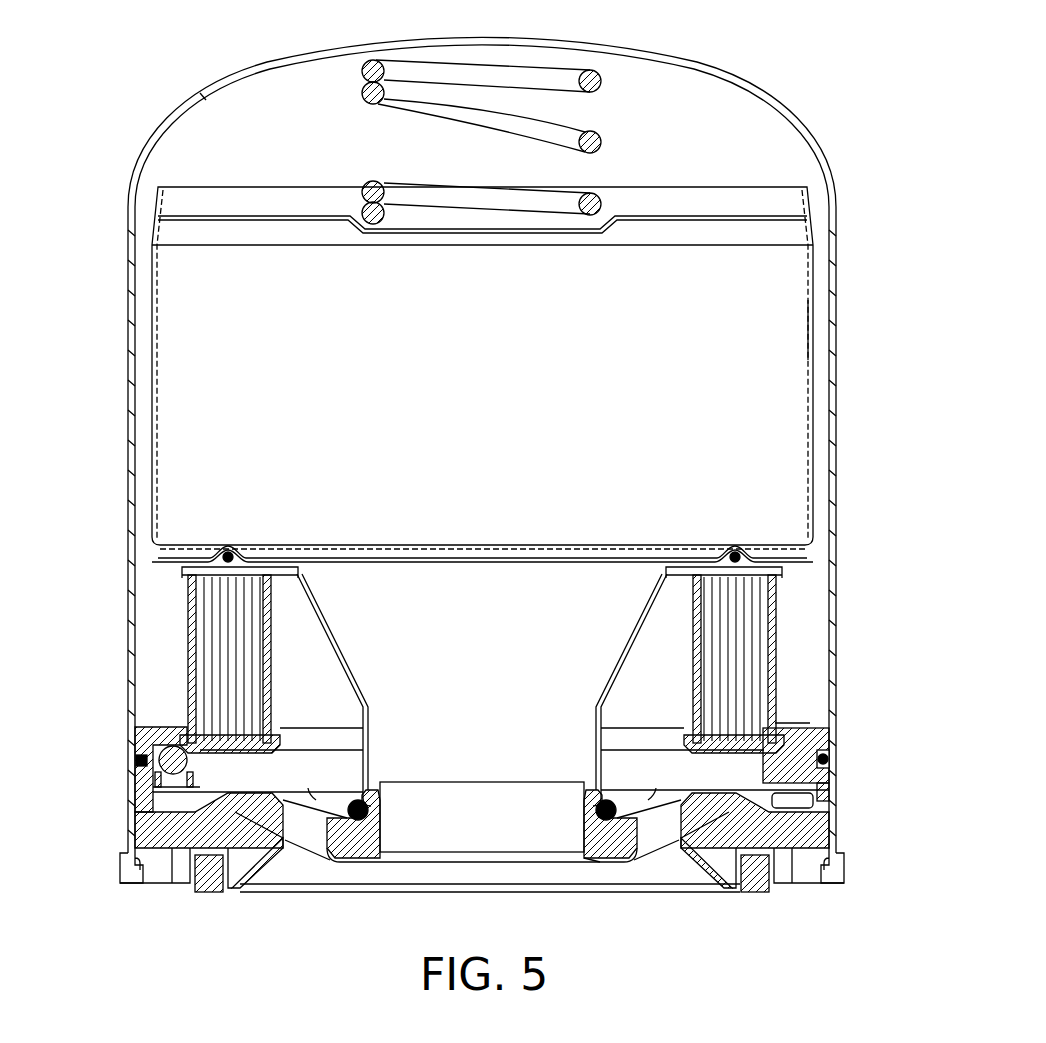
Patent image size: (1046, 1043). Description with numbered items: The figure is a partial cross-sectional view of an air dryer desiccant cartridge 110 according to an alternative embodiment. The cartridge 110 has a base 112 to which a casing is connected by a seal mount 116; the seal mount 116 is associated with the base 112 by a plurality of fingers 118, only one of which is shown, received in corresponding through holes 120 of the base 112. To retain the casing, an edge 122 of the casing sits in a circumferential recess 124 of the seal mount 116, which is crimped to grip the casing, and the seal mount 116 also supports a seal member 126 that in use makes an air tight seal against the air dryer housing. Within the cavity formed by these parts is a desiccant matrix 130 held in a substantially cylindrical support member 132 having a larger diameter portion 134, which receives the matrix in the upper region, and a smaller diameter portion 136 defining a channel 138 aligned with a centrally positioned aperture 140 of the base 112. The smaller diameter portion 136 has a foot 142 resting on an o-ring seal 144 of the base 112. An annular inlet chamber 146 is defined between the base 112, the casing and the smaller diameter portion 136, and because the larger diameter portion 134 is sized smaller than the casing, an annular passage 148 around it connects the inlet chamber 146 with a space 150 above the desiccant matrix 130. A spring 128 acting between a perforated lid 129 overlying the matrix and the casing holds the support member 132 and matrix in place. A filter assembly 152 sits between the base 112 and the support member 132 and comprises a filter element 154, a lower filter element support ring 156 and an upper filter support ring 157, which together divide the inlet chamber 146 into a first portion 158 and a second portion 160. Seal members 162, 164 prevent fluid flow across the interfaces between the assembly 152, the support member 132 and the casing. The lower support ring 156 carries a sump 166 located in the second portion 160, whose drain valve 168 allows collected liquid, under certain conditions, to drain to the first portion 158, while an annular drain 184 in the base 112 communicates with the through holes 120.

The air dryer desiccant cartridge 110 is at (775, 66).
The base 112 is at (600, 862).
The seal mount 116 is at (173, 893).
The fingers 118 is at (288, 840).
The through holes 120 is at (658, 848).
The edge 122 is at (835, 887).
The circumferential recess 124 is at (848, 868).
The seal member 126 is at (763, 893).
The spring 128 is at (374, 60).
The perforated lid 129 is at (207, 215).
The desiccant matrix 130 is at (462, 396).
The support member 132 is at (815, 330).
The larger diameter portion 134 is at (812, 238).
The smaller diameter portion 136 is at (376, 748).
The channel 138 is at (462, 673).
The aperture 140 is at (384, 806).
The foot 142 is at (618, 802).
The o-ring seal 144 is at (597, 812).
The annular inlet chamber 146 is at (648, 638).
The annular passage 148 is at (131, 282).
The space 150 is at (262, 100).
The filter assembly 152 is at (800, 595).
The filter element 154 is at (760, 656).
The lower filter element support ring 156 is at (832, 797).
The upper filter support ring 157 is at (185, 572).
The first portion 158 is at (288, 696).
The second portion 160 is at (140, 650).
The seal member 162 is at (731, 548).
The seal member 164 is at (830, 760).
The sump 166 is at (153, 735).
The drain valve 168 is at (134, 760).
The annular drain 184 is at (162, 806).